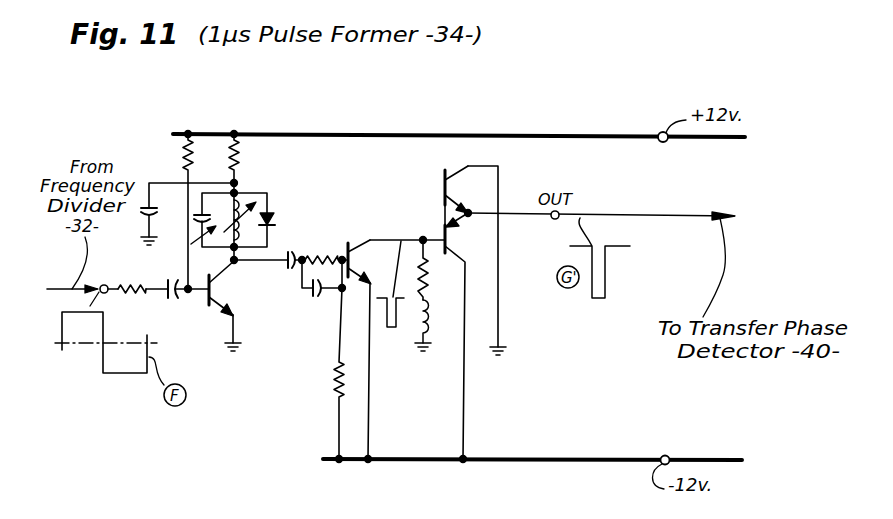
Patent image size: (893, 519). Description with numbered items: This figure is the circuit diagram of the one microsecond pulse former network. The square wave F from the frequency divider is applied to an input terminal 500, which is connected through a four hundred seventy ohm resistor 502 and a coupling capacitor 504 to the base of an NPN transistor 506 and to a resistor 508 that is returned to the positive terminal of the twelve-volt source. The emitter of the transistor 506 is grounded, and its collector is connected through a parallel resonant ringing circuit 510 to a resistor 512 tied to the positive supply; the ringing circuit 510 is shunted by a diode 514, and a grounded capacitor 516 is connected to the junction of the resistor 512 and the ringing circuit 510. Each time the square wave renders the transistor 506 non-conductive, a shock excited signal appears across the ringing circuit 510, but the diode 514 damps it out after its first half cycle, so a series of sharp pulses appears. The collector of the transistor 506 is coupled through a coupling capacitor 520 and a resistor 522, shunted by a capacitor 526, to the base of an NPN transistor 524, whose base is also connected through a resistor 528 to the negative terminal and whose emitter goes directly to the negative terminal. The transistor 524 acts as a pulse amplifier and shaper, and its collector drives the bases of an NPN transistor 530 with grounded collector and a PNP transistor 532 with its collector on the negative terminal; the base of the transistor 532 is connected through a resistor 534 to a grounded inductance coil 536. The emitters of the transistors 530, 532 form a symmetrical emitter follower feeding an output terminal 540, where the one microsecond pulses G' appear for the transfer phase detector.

The input terminal 500 is at (107, 293).
The resistor 502 is at (128, 285).
The coupling capacitor 504 is at (167, 284).
The NPN transistor 506 is at (214, 301).
The resistor 508 is at (185, 165).
The parallel resonant ringing circuit 510 is at (193, 255).
The resistor 512 is at (237, 165).
The diode 514 is at (269, 218).
The capacitor 516 is at (146, 216).
The coupling capacitor 520 is at (287, 252).
The resistor 522 is at (315, 257).
The NPN transistor 524 is at (346, 247).
The capacitor 526 is at (312, 294).
The resistor 528 is at (336, 381).
The NPN transistor 530 is at (445, 173).
The PNP transistor 532 is at (446, 258).
The resistor 534 is at (422, 266).
The inductance coil 536 is at (417, 334).
The output terminal 540 is at (557, 219).